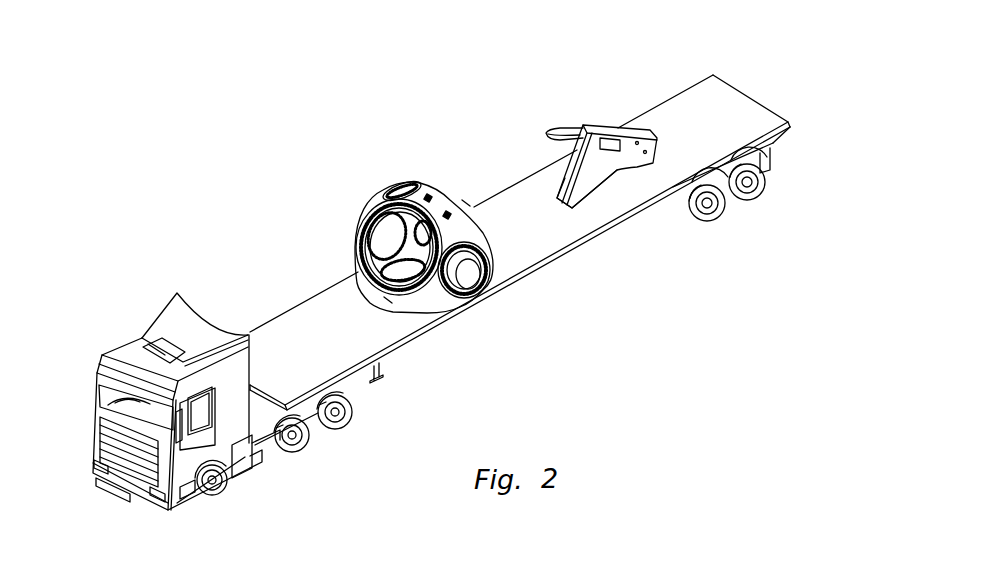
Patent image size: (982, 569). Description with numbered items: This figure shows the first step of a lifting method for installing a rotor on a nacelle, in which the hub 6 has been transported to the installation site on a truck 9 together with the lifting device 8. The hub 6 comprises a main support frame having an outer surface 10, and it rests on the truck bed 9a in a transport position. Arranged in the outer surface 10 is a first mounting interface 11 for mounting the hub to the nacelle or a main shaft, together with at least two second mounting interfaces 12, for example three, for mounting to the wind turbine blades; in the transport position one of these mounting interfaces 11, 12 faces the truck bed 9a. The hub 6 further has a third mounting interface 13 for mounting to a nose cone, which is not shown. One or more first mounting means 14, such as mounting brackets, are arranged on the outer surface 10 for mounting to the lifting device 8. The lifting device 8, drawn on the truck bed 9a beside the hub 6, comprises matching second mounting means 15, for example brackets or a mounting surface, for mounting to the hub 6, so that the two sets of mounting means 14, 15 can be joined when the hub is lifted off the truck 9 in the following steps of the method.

The hub 6 is at (383, 173).
The lifting device 8 is at (595, 113).
The truck 9 is at (158, 282).
The truck bed 9a is at (722, 115).
The outer surface 10 is at (430, 300).
The first mounting interface 11 is at (363, 207).
The second mounting interface 12 is at (388, 300).
The third mounting interface 13 is at (487, 280).
The first mounting means 14 is at (430, 190).
The second mounting means 15 is at (644, 173).